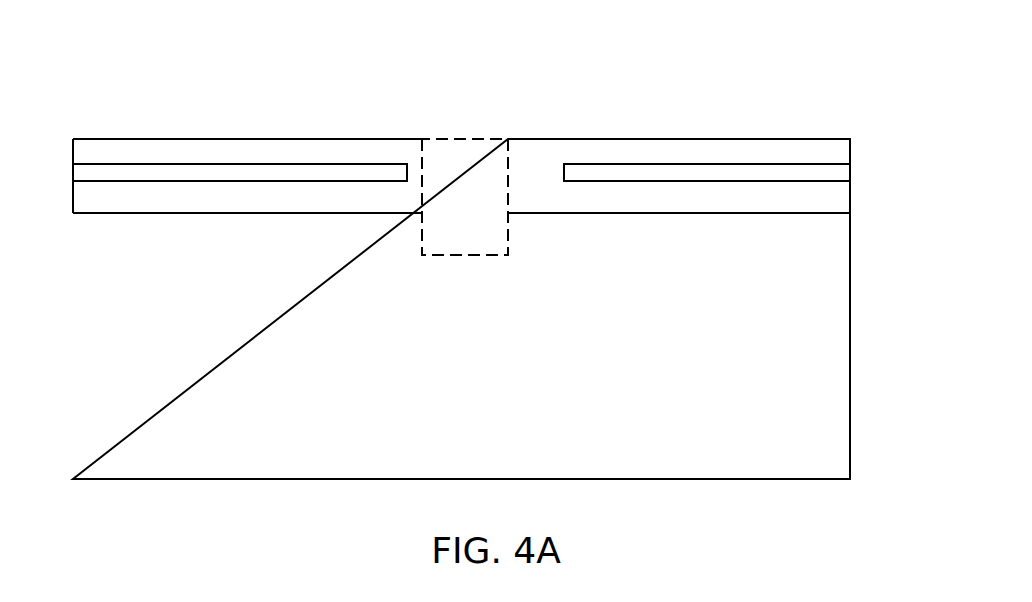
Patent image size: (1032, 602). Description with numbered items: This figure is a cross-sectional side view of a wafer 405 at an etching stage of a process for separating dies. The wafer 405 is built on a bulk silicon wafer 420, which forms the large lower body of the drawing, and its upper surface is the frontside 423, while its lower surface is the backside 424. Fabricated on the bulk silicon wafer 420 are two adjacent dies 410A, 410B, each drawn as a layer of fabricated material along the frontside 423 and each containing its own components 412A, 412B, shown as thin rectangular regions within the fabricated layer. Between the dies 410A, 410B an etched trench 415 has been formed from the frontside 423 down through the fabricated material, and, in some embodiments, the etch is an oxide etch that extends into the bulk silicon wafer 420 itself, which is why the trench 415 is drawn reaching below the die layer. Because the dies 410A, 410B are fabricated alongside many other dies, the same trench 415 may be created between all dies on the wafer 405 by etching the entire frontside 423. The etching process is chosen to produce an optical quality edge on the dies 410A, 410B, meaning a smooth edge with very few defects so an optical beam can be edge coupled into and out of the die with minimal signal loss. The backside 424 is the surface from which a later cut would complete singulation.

The wafer 405 is at (288, 55).
The die 410A is at (247, 138).
The die 410B is at (675, 138).
The components 412A is at (112, 163).
The components 412B is at (827, 163).
The etched trench 415 is at (461, 163).
The bulk silicon wafer 420 is at (461, 309).
The frontside 423 is at (852, 140).
The backside 424 is at (852, 478).